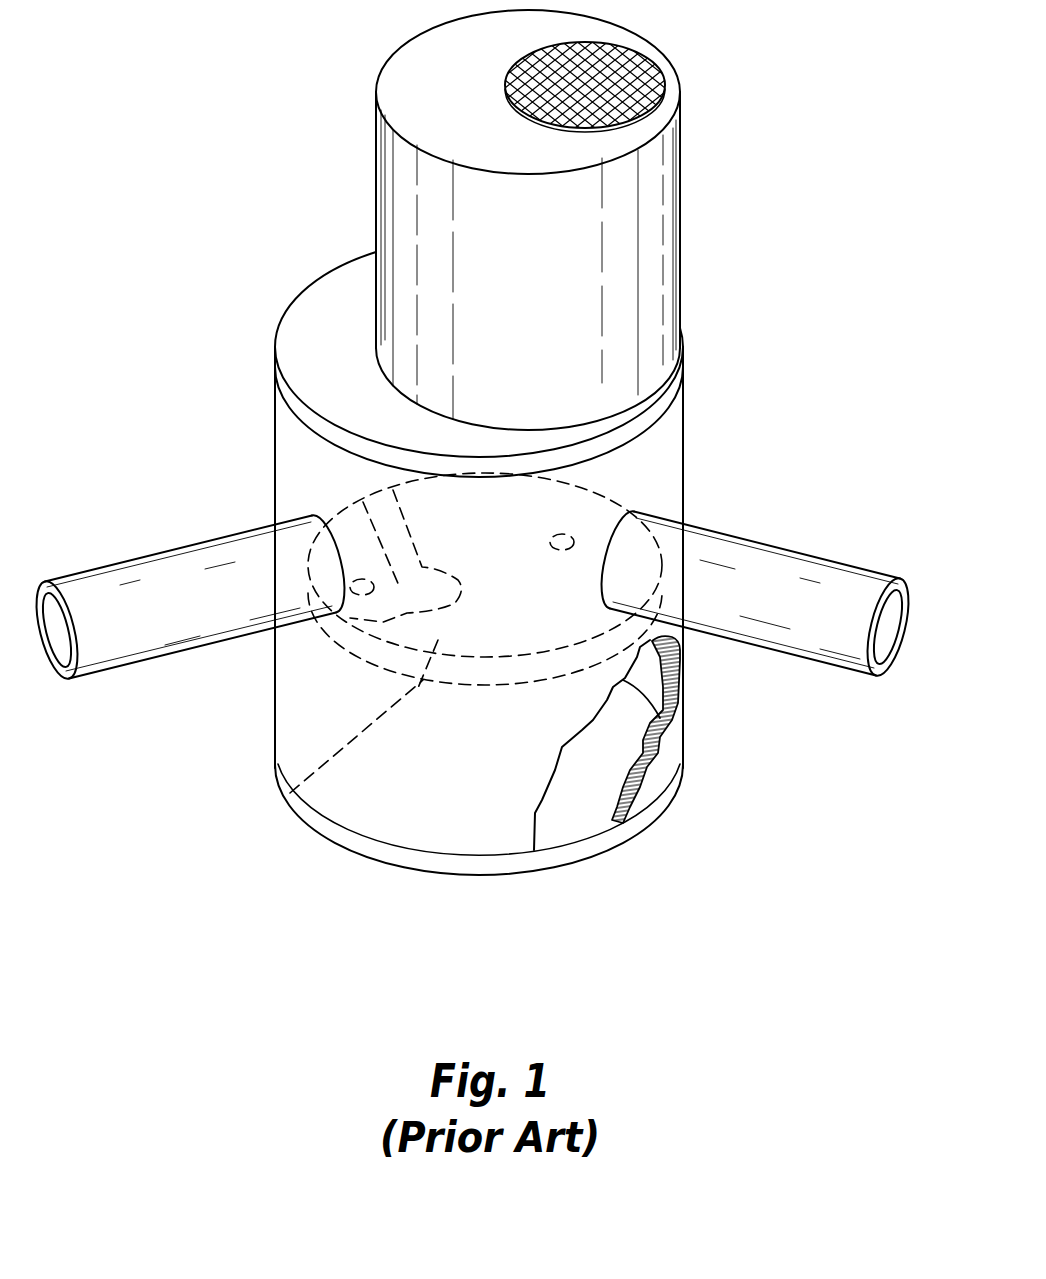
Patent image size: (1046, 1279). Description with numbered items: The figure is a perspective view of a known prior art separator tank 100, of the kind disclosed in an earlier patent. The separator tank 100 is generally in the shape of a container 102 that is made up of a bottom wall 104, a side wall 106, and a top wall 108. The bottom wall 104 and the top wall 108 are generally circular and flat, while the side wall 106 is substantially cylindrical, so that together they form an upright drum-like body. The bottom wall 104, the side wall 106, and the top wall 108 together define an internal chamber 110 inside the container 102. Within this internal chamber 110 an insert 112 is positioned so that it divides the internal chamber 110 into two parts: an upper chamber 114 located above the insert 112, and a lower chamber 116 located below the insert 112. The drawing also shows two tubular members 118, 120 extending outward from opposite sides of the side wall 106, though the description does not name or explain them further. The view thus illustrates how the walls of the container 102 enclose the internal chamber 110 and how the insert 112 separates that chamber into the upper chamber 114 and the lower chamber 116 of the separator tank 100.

The separator tank 100 is at (741, 342).
The container 102 is at (225, 721).
The bottom wall 104 is at (563, 815).
The side wall 106 is at (412, 828).
The top wall 108 is at (318, 302).
The internal chamber 110 is at (603, 763).
The insert 112 is at (292, 790).
The upper chamber 114 is at (660, 466).
The lower chamber 116 is at (643, 682).
The inlet pipe 118 is at (170, 570).
The outlet pipe 120 is at (805, 560).